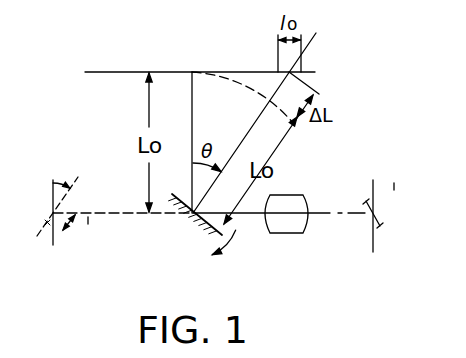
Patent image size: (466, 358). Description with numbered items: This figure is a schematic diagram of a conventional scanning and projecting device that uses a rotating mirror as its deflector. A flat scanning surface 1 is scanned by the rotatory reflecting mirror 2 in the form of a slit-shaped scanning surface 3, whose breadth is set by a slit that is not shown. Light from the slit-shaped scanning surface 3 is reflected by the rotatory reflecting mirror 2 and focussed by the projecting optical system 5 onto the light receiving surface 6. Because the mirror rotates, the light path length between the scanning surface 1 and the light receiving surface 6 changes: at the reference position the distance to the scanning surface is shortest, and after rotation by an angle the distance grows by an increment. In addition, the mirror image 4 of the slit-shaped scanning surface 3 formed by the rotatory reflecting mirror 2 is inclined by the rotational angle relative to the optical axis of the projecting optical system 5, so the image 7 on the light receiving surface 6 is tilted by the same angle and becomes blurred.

The flat scanning surface 1 is at (152, 72).
The rotatory reflecting mirror 2 is at (196, 228).
The slit-shaped scanning surface 3 is at (261, 113).
The mirror image 4 is at (62, 215).
The projecting optical system 5 is at (283, 235).
The light receiving surface 6 is at (370, 256).
The image 7 is at (380, 220).